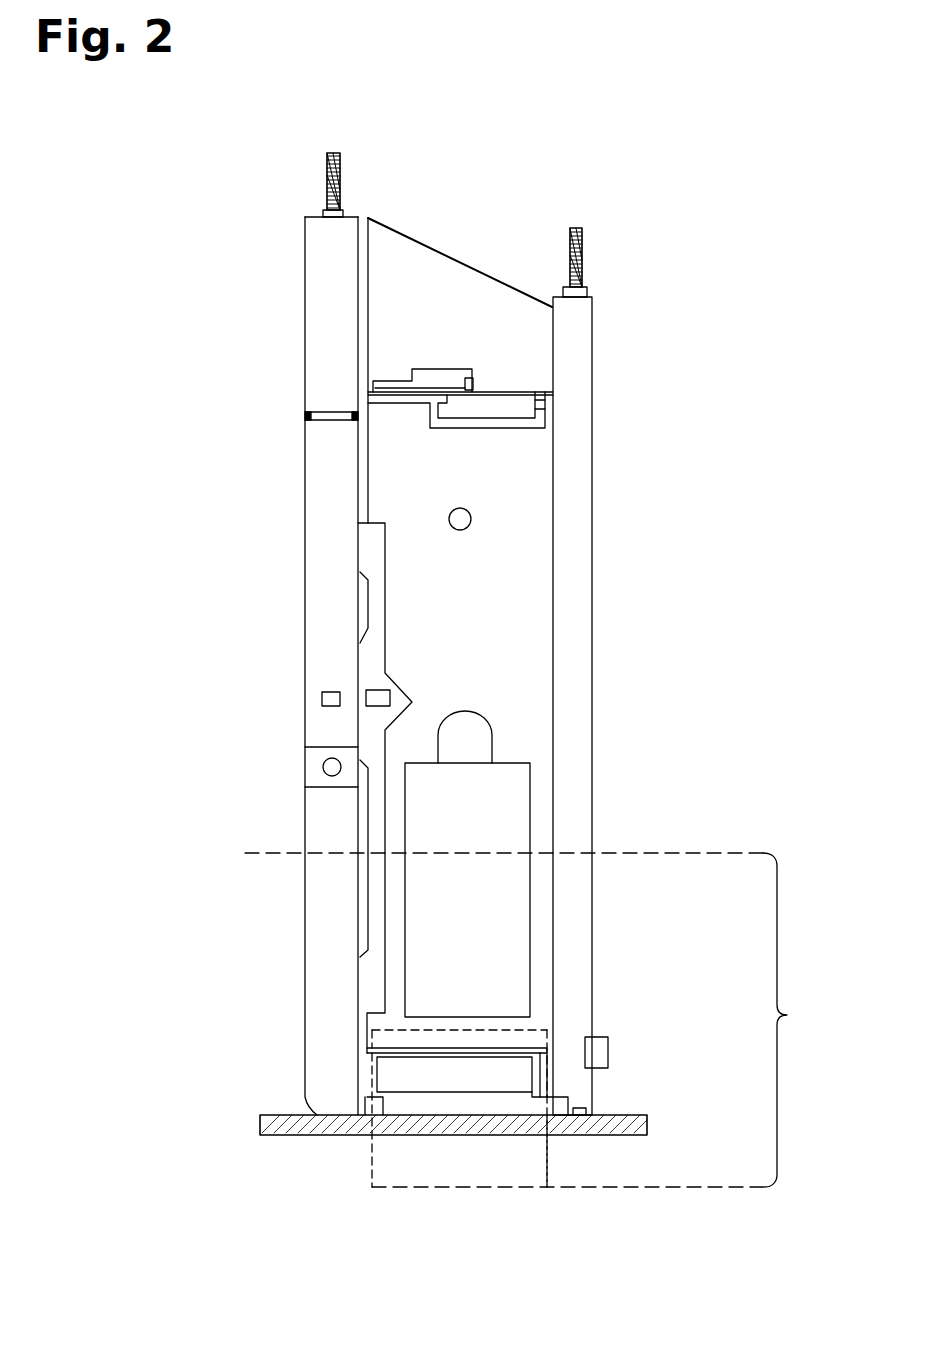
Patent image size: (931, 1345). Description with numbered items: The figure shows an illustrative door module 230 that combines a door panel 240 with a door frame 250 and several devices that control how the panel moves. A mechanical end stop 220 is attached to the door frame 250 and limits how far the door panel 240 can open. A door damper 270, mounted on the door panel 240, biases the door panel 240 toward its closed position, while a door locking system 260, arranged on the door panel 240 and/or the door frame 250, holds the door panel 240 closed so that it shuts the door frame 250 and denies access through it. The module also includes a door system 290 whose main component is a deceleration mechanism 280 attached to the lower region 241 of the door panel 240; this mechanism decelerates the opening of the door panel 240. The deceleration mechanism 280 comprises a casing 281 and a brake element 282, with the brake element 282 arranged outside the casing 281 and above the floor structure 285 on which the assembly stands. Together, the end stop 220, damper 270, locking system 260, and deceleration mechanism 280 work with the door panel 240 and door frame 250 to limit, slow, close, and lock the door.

The mechanical end stop 220 is at (598, 1053).
The door module 230 is at (460, 200).
The door panel 240 is at (522, 608).
The lower region 241 is at (542, 1020).
The door frame 250 is at (327, 937).
The door locking system 260 is at (370, 665).
The door damper 270 is at (522, 411).
The deceleration mechanism 280 is at (543, 1050).
The casing 281 is at (397, 1075).
The brake element 282 is at (405, 1105).
The floor structure 285 is at (643, 1120).
The door system 290 is at (550, 1162).